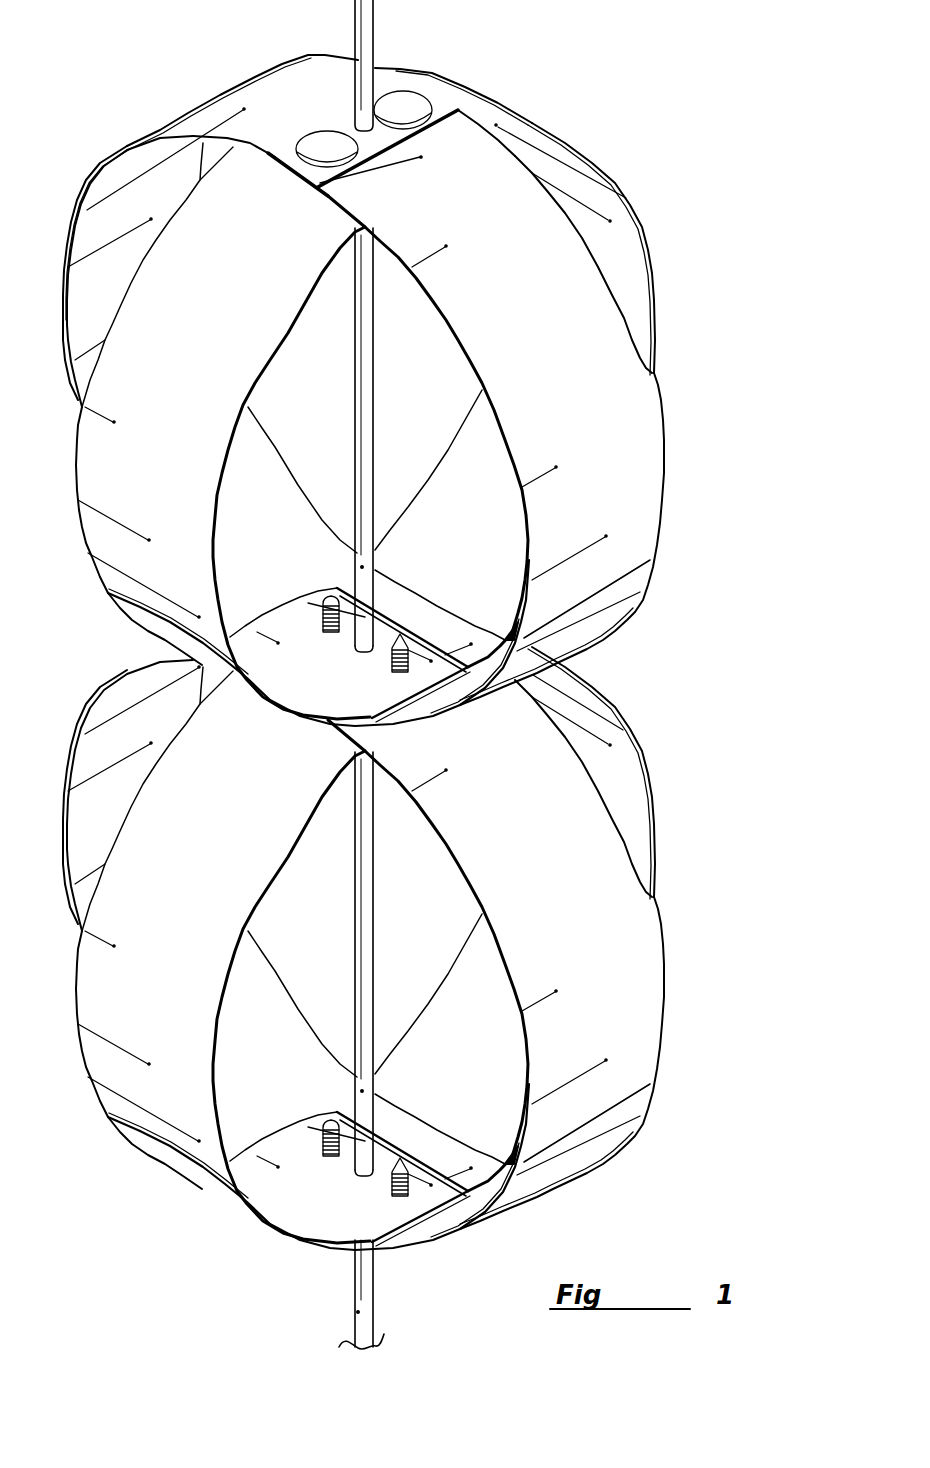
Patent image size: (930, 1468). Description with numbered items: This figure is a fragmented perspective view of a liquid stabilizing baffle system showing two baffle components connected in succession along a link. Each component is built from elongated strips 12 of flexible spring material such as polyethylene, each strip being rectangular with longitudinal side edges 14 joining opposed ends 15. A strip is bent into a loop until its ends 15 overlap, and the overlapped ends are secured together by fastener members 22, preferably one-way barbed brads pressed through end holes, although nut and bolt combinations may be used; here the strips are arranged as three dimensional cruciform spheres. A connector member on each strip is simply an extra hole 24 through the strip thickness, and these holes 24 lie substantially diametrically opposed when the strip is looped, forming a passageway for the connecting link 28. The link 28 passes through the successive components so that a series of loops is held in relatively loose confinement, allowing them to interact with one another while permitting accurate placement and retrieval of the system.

The elongated strip 12 is at (399, 652).
The longitudinal side edge 14 is at (627, 330).
The end 15 is at (302, 180).
The fastener member 22 is at (330, 140).
The extra hole 24 is at (367, 653).
The connecting link 28 is at (377, 448).